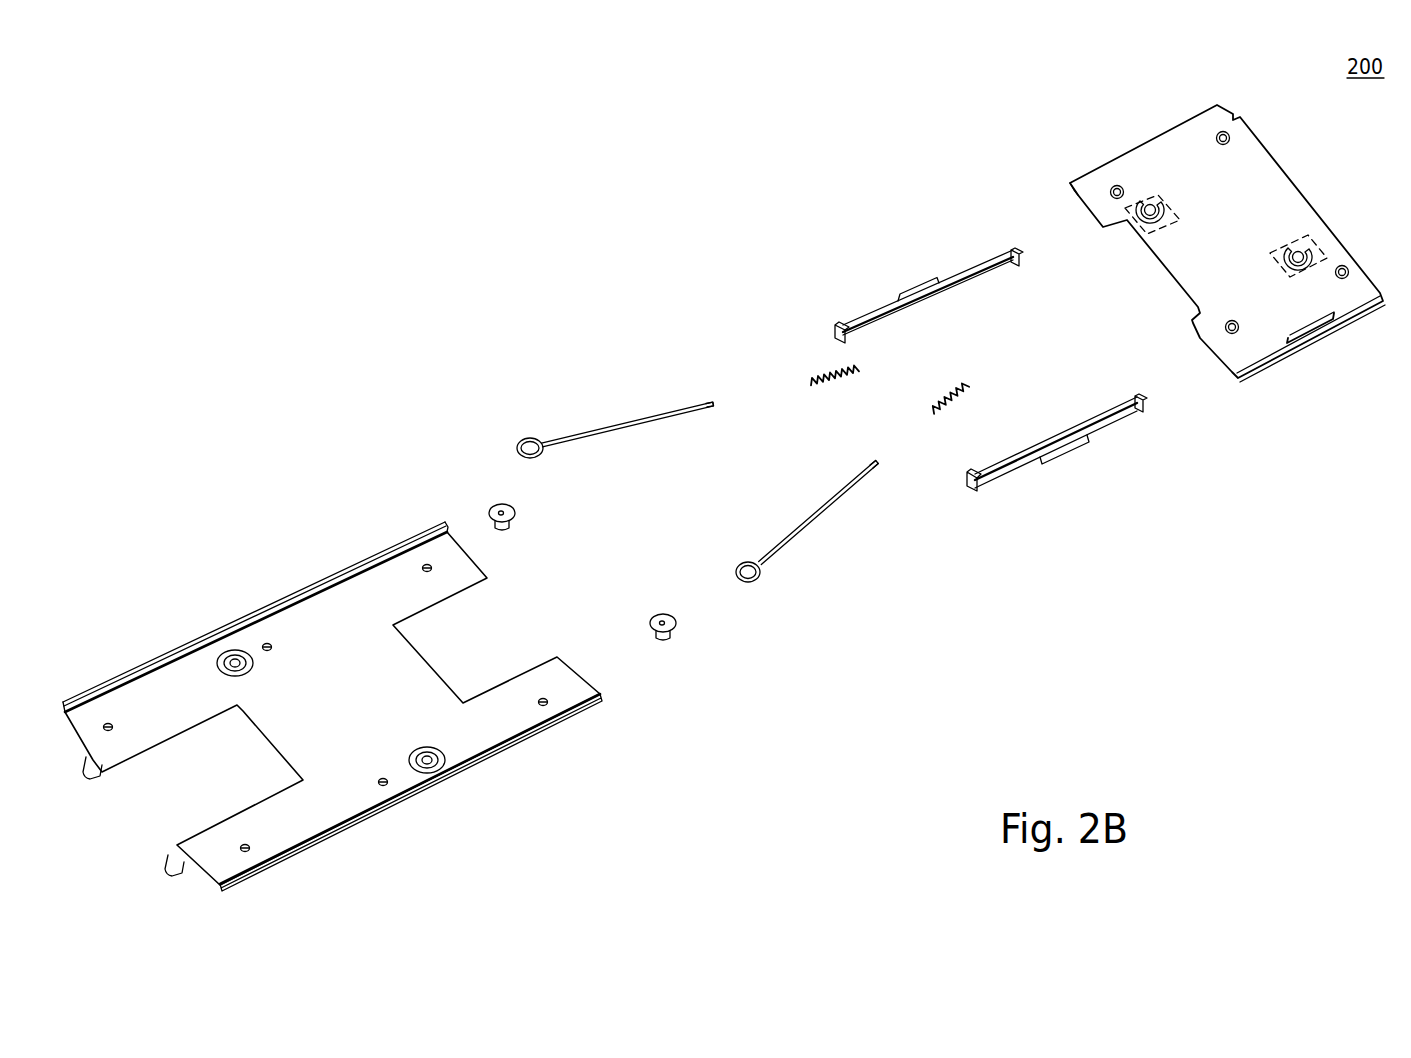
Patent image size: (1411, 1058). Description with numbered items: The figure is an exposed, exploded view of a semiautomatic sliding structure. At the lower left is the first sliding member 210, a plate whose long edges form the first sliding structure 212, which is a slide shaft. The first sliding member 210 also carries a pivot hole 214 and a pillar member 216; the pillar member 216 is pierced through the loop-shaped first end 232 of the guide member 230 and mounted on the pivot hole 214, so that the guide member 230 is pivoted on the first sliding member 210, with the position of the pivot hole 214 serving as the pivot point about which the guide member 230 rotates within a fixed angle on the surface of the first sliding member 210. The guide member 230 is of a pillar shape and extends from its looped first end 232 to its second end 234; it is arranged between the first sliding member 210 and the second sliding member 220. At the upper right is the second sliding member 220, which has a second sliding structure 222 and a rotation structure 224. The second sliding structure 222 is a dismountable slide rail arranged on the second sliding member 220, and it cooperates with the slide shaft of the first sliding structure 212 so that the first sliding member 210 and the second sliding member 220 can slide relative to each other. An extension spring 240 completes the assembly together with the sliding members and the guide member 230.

The first sliding member 210 is at (350, 627).
The first sliding structure 212 is at (130, 680).
The pivot hole 214 is at (237, 650).
The pillar member 216 is at (500, 505).
The second sliding member 220 is at (1248, 182).
The second sliding structure 222 is at (920, 300).
The rotation structure 224 is at (1141, 199).
The guide member 230 is at (650, 417).
The first end 232 is at (530, 437).
The second end 234 is at (713, 400).
The extension spring 240 is at (828, 370).